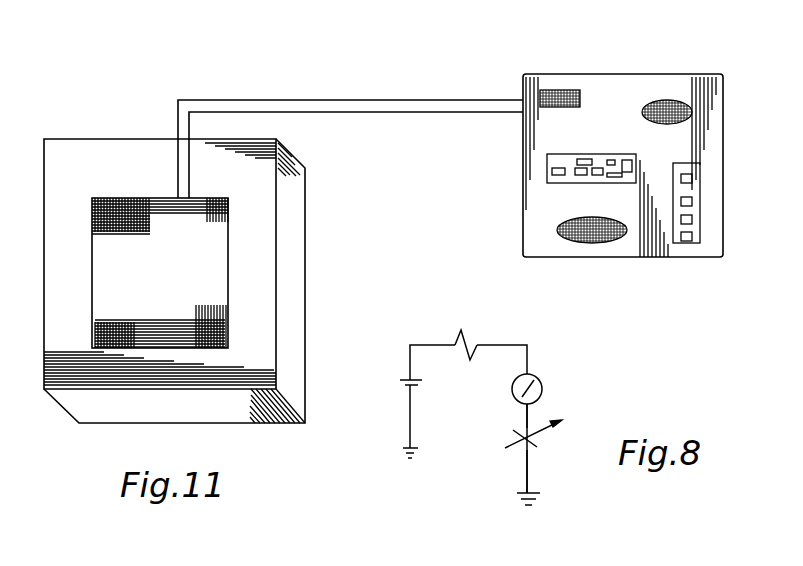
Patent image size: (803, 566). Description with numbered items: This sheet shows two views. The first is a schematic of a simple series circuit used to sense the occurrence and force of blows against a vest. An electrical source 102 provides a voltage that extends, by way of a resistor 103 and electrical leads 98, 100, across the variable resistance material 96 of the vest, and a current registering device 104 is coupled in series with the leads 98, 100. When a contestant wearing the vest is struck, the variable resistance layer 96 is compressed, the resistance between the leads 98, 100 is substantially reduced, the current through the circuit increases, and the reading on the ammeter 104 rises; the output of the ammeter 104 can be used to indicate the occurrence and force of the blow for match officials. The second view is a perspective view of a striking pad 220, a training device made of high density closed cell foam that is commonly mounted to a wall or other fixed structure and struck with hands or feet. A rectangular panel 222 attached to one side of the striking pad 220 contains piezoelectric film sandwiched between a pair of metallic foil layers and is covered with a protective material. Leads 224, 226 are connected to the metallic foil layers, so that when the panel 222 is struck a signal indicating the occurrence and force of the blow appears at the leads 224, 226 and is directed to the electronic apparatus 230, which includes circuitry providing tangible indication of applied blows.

In FIG. 11, the striking pad 220 is at (298, 245).
In FIG. 11, the rectangular panel 222 is at (178, 348).
In FIG. 11, the lead 224 is at (412, 113).
In FIG. 11, the lead 226 is at (393, 72).
In FIG. 11, the electronic apparatus 230 is at (650, 257).
In FIG. 8, the variable resistance material 96 is at (553, 442).
In FIG. 8, the electrical lead 98 is at (527, 414).
In FIG. 8, the electrical lead 100 is at (528, 475).
In FIG. 8, the electrical source 102 is at (401, 385).
In FIG. 8, the resistor 103 is at (487, 318).
In FIG. 8, the current registering device 104 is at (545, 382).